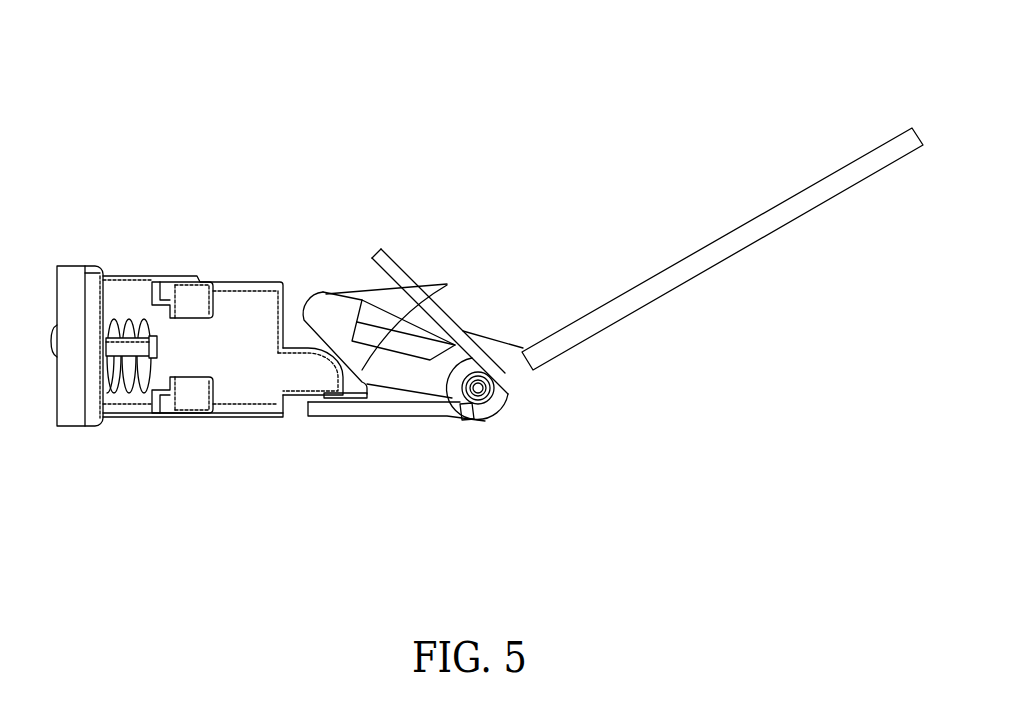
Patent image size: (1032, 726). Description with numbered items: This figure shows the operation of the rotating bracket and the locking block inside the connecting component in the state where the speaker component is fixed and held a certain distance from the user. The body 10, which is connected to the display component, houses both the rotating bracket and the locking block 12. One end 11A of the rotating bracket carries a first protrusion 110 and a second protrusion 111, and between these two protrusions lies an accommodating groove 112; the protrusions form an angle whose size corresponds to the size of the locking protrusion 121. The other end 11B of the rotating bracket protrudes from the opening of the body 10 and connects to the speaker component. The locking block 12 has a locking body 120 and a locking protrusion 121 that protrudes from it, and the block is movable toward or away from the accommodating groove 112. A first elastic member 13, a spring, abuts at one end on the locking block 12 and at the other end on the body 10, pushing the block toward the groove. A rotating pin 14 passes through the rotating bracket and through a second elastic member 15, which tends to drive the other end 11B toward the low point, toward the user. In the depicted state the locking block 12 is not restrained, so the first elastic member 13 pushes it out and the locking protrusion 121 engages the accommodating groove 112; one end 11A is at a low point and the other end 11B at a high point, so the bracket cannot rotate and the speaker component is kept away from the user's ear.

The body 10 is at (72, 280).
The locking block 12 is at (228, 432).
The locking body 120 is at (238, 300).
The locking protrusion 121 is at (304, 376).
The first elastic member 13 is at (118, 394).
The first protrusion 110 is at (327, 305).
The second protrusion 111 is at (344, 420).
The accommodating groove 112 is at (368, 398).
The one end of the rotating bracket 11A is at (357, 272).
The other end of the rotating bracket 11B is at (880, 127).
The rotating pin 14 is at (487, 390).
The second elastic member 15 is at (502, 382).